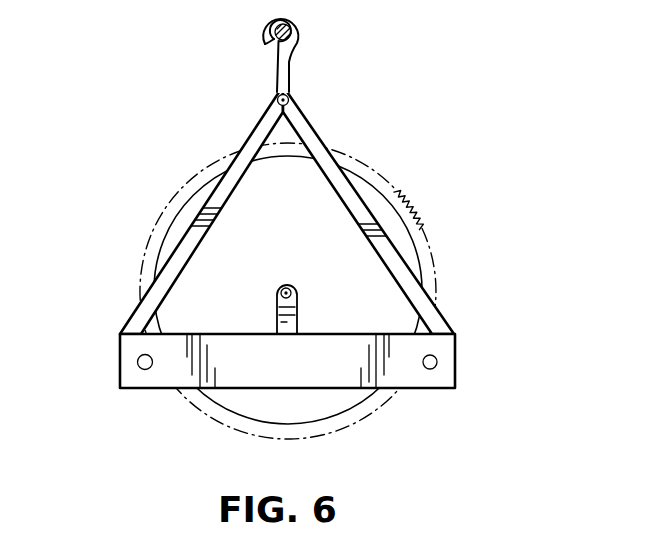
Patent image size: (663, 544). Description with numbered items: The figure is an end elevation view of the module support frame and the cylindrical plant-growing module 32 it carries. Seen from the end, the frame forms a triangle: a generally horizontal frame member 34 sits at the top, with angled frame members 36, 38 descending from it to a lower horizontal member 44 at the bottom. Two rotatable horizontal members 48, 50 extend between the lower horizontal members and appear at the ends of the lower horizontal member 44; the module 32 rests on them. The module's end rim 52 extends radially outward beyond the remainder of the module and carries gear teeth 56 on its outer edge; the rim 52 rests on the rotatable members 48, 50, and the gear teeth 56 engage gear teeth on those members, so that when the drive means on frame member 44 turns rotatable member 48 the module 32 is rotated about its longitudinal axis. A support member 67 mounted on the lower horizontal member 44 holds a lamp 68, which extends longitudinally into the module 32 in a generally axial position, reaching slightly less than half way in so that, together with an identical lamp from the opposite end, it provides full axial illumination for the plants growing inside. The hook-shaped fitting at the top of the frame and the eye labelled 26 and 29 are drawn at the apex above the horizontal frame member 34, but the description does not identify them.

The hook 26 is at (277, 45).
The hook eye 29 is at (298, 23).
The cylindrical plant-growing module 32 is at (182, 218).
The horizontal frame member 34 is at (277, 102).
The angled frame member 36 is at (180, 262).
The angled frame member 38 is at (398, 272).
The lower horizontal member 44 is at (433, 342).
The rotatable horizontal member 48 is at (437, 362).
The rotatable horizontal member 50 is at (140, 362).
The end rim 52 is at (376, 173).
The gear teeth 56 is at (410, 205).
The support member 67 is at (283, 322).
The lamp 68 is at (283, 288).